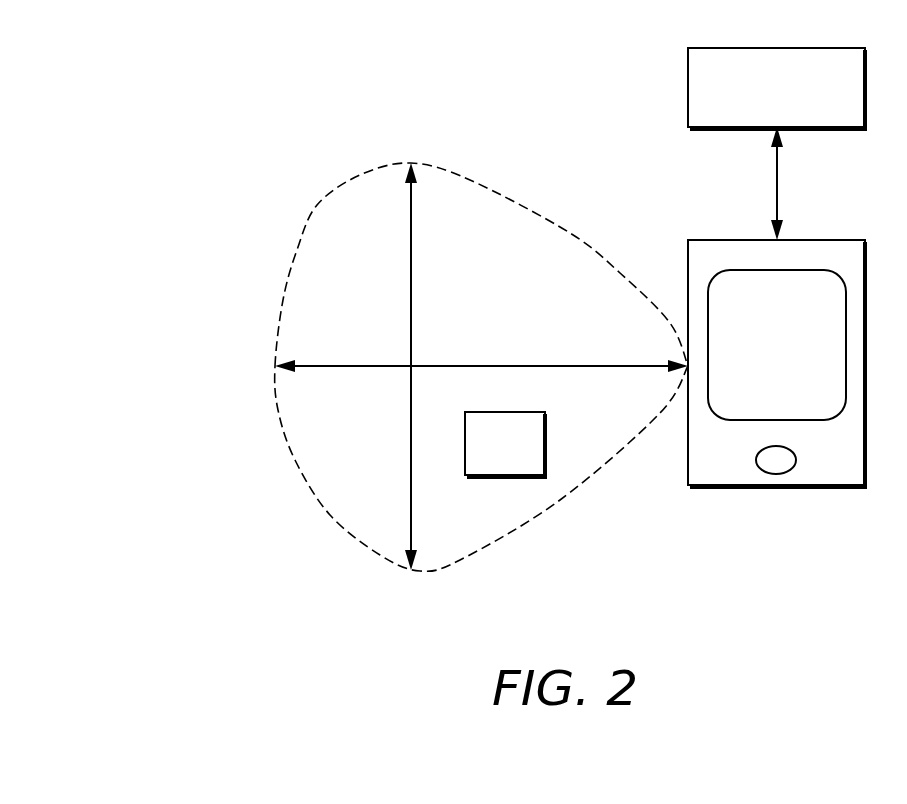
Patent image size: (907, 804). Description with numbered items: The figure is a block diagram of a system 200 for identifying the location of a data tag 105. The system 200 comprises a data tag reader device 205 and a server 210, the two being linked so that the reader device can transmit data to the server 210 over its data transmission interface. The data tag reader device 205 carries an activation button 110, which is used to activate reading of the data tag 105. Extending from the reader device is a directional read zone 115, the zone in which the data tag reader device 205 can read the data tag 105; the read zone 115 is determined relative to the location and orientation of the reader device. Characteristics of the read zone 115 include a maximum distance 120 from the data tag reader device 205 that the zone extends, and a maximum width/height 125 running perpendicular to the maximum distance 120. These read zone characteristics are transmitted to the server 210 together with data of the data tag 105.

The system 200 is at (178, 167).
The server 210 is at (843, 48).
The data tag reader device 205 is at (843, 240).
The activation button 110 is at (777, 474).
The read zone 115 is at (620, 280).
The maximum distance 120 is at (509, 362).
The maximum width/height 125 is at (411, 274).
The data tag 105 is at (527, 412).